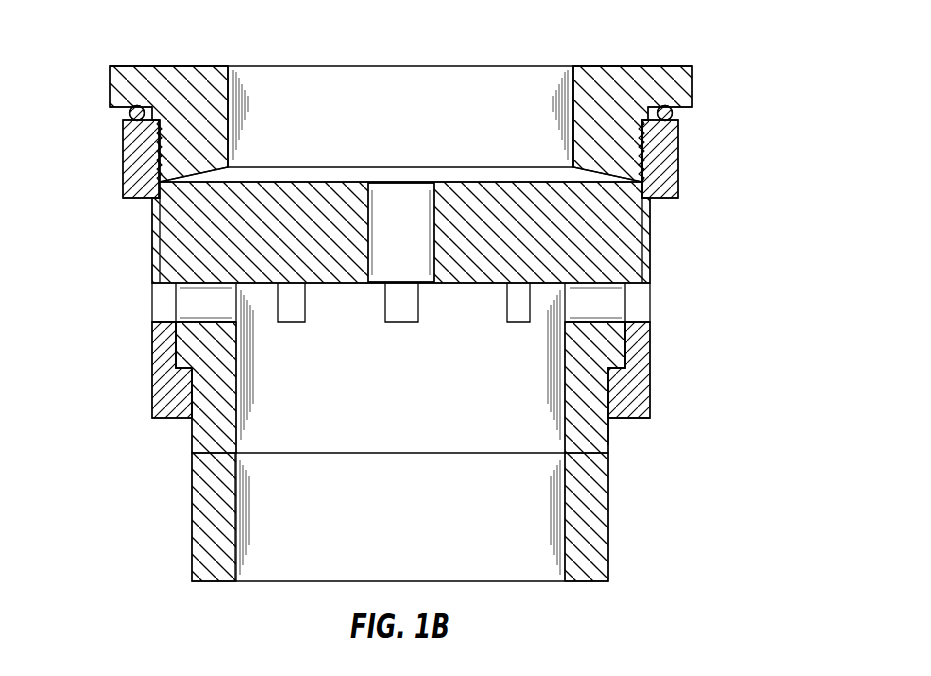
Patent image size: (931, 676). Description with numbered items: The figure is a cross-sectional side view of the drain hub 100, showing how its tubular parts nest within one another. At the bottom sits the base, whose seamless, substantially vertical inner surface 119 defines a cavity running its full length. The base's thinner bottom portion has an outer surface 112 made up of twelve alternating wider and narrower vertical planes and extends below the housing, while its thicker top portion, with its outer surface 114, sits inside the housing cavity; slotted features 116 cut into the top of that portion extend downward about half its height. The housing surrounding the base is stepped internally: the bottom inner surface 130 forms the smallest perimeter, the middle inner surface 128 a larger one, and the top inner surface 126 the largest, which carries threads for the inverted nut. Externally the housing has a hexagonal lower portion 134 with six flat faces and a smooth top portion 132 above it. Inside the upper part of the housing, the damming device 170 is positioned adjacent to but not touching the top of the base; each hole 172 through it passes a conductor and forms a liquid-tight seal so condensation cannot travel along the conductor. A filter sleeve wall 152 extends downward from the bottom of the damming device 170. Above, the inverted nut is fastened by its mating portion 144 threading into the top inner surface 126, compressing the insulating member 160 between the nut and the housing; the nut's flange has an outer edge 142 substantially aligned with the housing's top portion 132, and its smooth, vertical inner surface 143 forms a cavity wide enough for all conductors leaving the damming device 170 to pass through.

The drain hub 100 is at (697, 42).
The outer surface 112 is at (592, 538).
The outer surface 114 is at (595, 345).
The slotted features 116 is at (518, 303).
The inner surface 119 is at (425, 533).
The top inner surface 126 is at (643, 150).
The middle inner surface 128 is at (625, 307).
The bottom inner surface 130 is at (608, 387).
The top portion 132 is at (122, 158).
The lower portion 134 is at (625, 408).
The outer edge 142 is at (692, 88).
The inner surface 143 is at (424, 130).
The mating portion 144 is at (592, 130).
The filter sleeve wall 152 is at (424, 387).
The insulating member 160 is at (673, 113).
The damming device 170 is at (556, 246).
The hole 172 is at (424, 246).